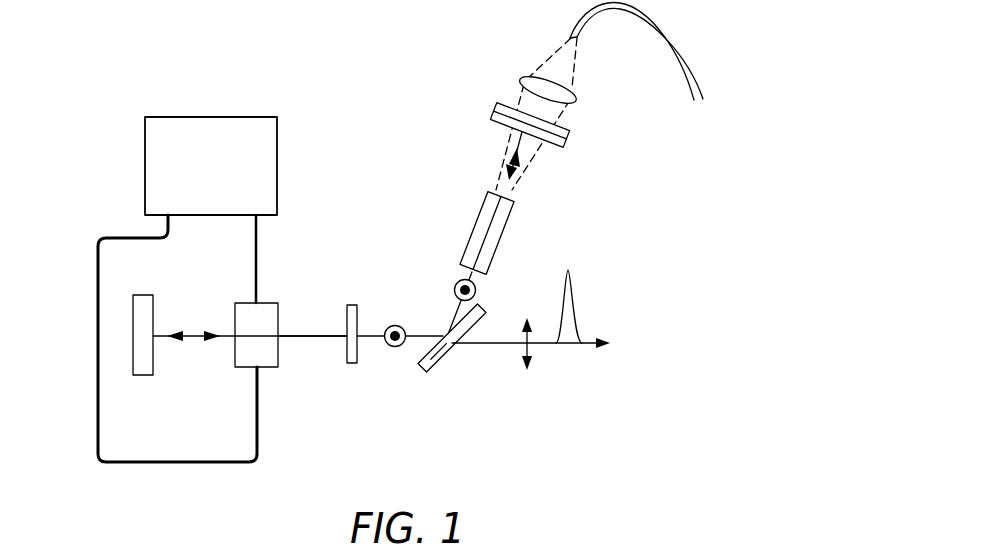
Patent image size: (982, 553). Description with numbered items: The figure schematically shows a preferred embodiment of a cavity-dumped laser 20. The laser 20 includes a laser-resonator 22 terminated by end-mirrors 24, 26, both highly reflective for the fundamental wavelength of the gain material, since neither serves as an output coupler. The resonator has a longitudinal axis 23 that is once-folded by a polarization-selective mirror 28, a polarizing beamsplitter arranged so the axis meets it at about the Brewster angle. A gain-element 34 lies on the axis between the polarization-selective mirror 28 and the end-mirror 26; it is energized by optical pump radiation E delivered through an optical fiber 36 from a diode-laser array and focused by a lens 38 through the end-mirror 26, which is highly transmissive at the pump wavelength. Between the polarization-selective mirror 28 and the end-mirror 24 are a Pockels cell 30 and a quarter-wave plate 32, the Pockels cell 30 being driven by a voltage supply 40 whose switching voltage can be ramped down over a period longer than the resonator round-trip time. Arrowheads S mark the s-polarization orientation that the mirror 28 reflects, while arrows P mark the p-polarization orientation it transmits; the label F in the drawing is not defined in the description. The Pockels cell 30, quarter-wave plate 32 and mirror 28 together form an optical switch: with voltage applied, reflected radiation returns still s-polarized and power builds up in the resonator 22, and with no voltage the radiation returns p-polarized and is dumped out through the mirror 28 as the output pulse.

The laser 20 is at (508, 449).
The laser-resonator 22 is at (328, 325).
The longitudinal axis 23 is at (290, 338).
The end-mirror 24 is at (155, 355).
The end-mirror 26 is at (550, 150).
The polarization-selective mirror 28 is at (447, 355).
The Pockels cell 30 is at (268, 367).
The quarter-wave plate 32 is at (358, 348).
The gain-element 34 is at (478, 213).
The optical fiber 36 is at (688, 43).
The lens 38 is at (537, 78).
The voltage supply 40 is at (136, 151).
The optical pump radiation E is at (548, 63).
The electric field F is at (212, 330).
The s-polarization arrowheads S is at (397, 348).
The p-polarization arrows P is at (532, 357).